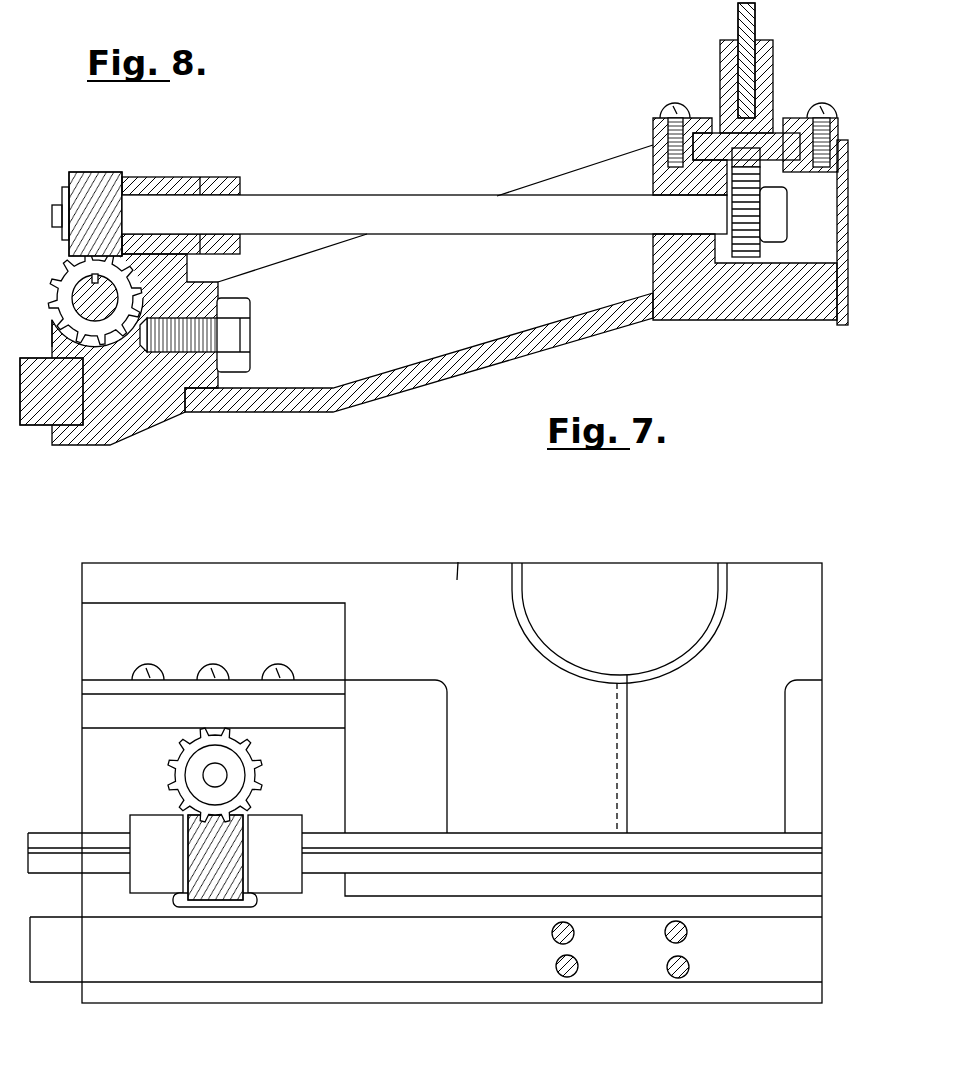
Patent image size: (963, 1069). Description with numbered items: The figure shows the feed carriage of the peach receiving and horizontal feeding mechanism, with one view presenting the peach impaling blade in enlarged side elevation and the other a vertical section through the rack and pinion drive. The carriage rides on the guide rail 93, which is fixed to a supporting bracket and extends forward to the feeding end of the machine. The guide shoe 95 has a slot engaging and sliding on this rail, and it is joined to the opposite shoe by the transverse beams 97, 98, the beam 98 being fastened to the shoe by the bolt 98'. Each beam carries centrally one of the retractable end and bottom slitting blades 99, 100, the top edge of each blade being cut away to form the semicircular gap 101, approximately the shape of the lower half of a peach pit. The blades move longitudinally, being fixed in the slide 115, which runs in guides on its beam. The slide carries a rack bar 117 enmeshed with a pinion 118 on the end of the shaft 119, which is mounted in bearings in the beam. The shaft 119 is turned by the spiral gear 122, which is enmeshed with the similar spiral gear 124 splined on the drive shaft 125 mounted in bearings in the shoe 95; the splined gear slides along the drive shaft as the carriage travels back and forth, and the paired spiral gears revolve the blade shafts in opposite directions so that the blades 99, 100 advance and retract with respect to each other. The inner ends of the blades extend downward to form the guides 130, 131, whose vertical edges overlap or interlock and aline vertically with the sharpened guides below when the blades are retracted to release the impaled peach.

In FIG. 8, the guide rail 93 is at (38, 425).
In FIG. 7, the guide rail 93 is at (66, 972).
In FIG. 8, the guide shoe 95 is at (155, 430).
In FIG. 7, the guide shoe 95 is at (228, 994).
In FIG. 7, the transverse beam 97 is at (333, 790).
In FIG. 8, the transverse beam 98 is at (419, 371).
In FIG. 8, the bolt 98' is at (216, 335).
In FIG. 7, the slitting blade 99 is at (767, 577).
In FIG. 8, the slitting blade 100 is at (758, 18).
In FIG. 7, the slitting blade 100 is at (462, 557).
In FIG. 7, the semicircular gap 101 is at (620, 619).
In FIG. 8, the slide 115 is at (775, 87).
In FIG. 7, the slide 115 is at (97, 662).
In FIG. 8, the rack bar 117 is at (760, 163).
In FIG. 8, the pinion 118 is at (762, 248).
In FIG. 8, the shaft 119 is at (518, 234).
In FIG. 7, the shaft 119 is at (215, 775).
In FIG. 8, the spiral gear 122 is at (110, 180).
In FIG. 7, the spiral gear 122 is at (182, 773).
In FIG. 8, the spiral gear 124 is at (57, 284).
In FIG. 7, the spiral gear 124 is at (213, 853).
In FIG. 8, the drive shaft 125 is at (70, 317).
In FIG. 7, the drive shaft 125 is at (407, 837).
In FIG. 7, the guide 130 is at (492, 730).
In FIG. 7, the guide 131 is at (740, 787).